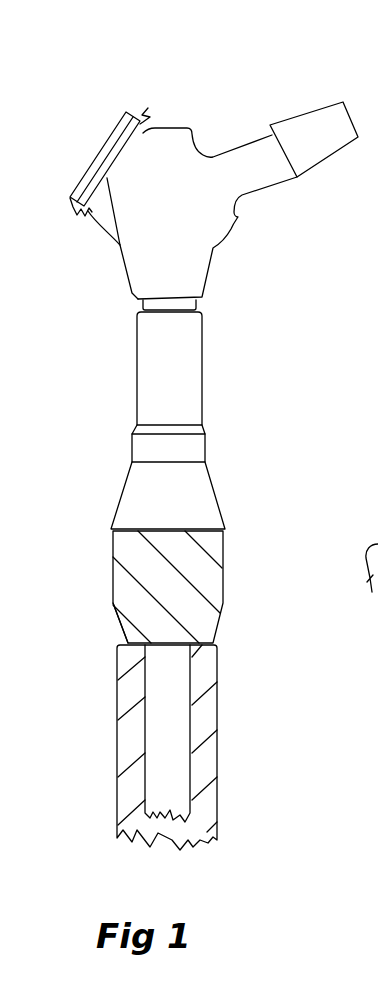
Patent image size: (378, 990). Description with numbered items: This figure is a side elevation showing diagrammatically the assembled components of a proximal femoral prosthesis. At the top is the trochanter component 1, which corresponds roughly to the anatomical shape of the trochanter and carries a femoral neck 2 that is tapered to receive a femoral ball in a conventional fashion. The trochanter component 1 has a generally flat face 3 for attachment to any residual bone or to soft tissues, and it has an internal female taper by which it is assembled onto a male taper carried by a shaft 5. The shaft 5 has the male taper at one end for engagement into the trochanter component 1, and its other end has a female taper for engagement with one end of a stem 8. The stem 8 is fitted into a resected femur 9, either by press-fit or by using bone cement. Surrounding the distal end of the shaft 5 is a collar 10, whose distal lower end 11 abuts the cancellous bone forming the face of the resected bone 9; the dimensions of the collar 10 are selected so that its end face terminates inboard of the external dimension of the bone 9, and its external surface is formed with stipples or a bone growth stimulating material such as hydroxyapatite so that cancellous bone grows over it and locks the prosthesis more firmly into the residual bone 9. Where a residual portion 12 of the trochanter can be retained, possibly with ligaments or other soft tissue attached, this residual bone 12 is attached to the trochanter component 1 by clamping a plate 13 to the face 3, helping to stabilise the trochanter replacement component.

The trochanter component 1 is at (238, 217).
The femoral neck 2 is at (303, 112).
The flat face 3 is at (120, 247).
The shaft 5 is at (202, 397).
The stem 8 is at (145, 705).
The resected femur 9 is at (218, 769).
The collar 10 is at (223, 586).
The distal lower end 11 is at (117, 611).
The residual portion of the trochanter 12 is at (146, 113).
The plate 13 is at (83, 177).